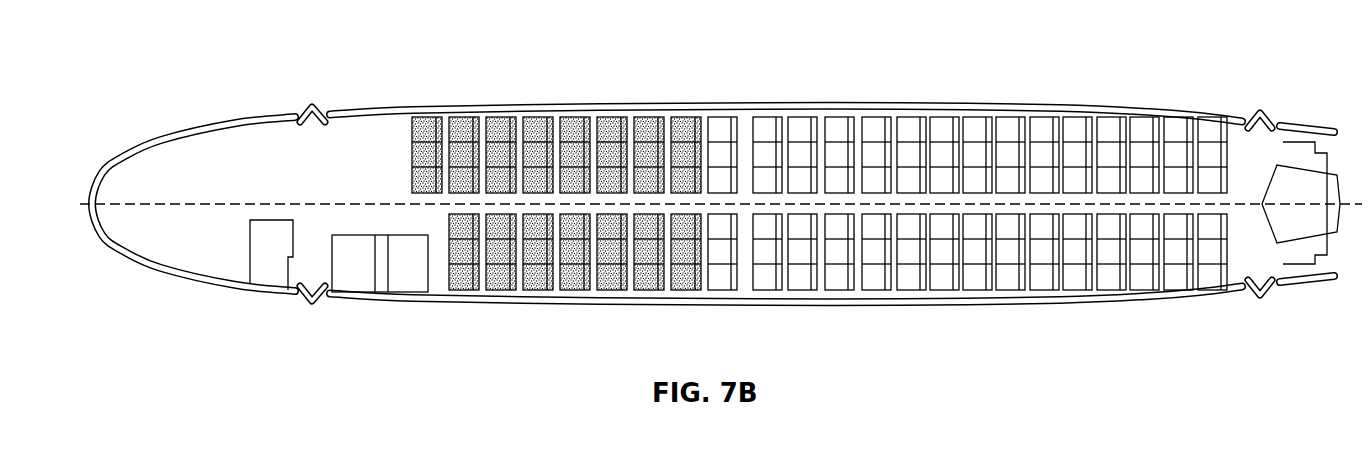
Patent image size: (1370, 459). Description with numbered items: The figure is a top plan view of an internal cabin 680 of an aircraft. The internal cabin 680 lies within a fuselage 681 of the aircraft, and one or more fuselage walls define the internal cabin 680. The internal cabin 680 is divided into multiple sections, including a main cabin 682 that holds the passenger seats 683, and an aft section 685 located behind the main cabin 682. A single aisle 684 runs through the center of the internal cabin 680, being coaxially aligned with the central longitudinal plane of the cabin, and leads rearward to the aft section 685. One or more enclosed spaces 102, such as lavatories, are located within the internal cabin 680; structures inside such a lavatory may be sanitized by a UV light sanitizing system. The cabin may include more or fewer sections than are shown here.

The internal cabin 680 is at (667, 160).
The fuselage 681 is at (523, 108).
The main cabin 682 is at (463, 133).
The passenger seats 683 is at (723, 135).
The single aisle 684 is at (838, 198).
The aft section 685 is at (1247, 140).
The enclosed space 102 is at (378, 263).